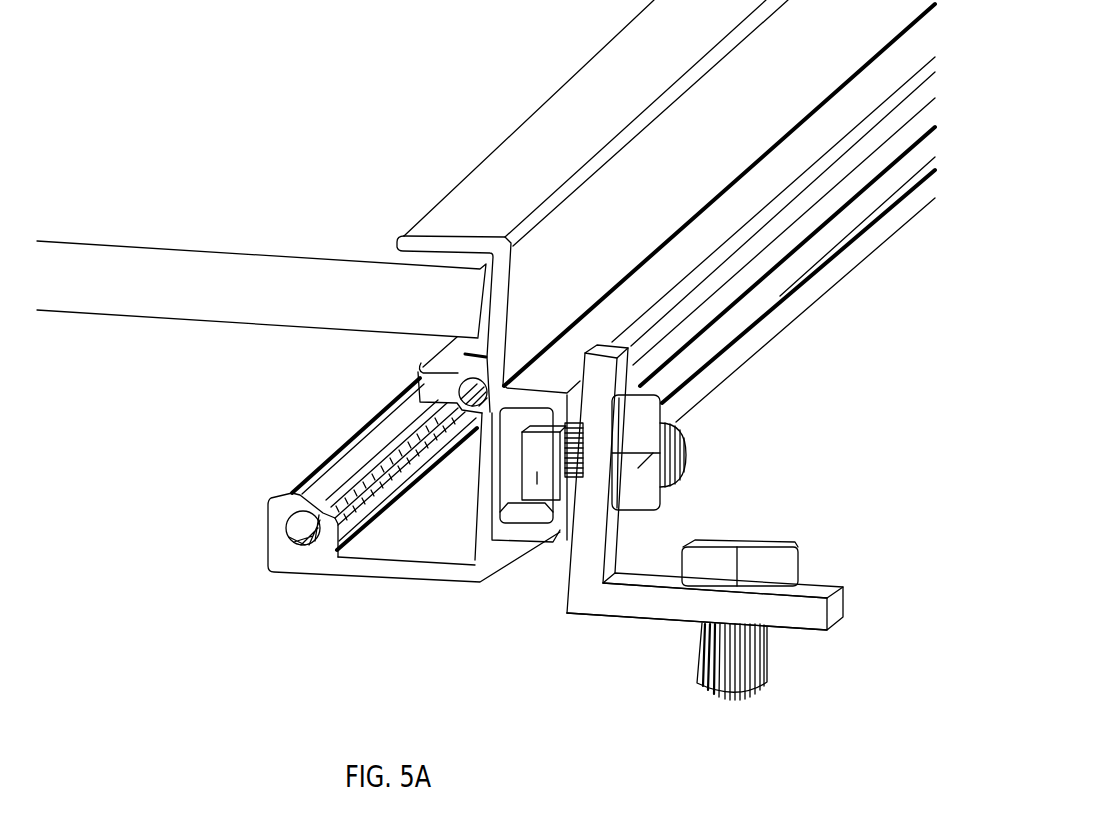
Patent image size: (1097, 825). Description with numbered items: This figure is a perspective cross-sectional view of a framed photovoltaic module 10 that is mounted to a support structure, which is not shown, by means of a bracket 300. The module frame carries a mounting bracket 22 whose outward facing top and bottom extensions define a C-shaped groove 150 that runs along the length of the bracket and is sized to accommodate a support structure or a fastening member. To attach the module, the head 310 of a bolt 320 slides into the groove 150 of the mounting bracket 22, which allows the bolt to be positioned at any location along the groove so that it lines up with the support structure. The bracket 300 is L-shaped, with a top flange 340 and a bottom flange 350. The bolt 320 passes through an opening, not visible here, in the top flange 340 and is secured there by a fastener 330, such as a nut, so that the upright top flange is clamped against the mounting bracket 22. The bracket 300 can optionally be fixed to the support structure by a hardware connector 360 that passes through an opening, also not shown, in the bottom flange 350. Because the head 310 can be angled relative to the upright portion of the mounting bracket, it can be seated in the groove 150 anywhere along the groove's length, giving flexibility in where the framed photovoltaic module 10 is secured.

The framed photovoltaic module 10 is at (413, 193).
The bracket 22 is at (567, 120).
The groove 150 is at (509, 455).
The bracket 300 is at (605, 603).
The head 310 is at (533, 480).
The bolt 320 is at (382, 415).
The fastener 330 is at (687, 442).
The top flange 340 is at (598, 392).
The bottom flange 350 is at (813, 613).
The hardware connector 360 is at (703, 563).